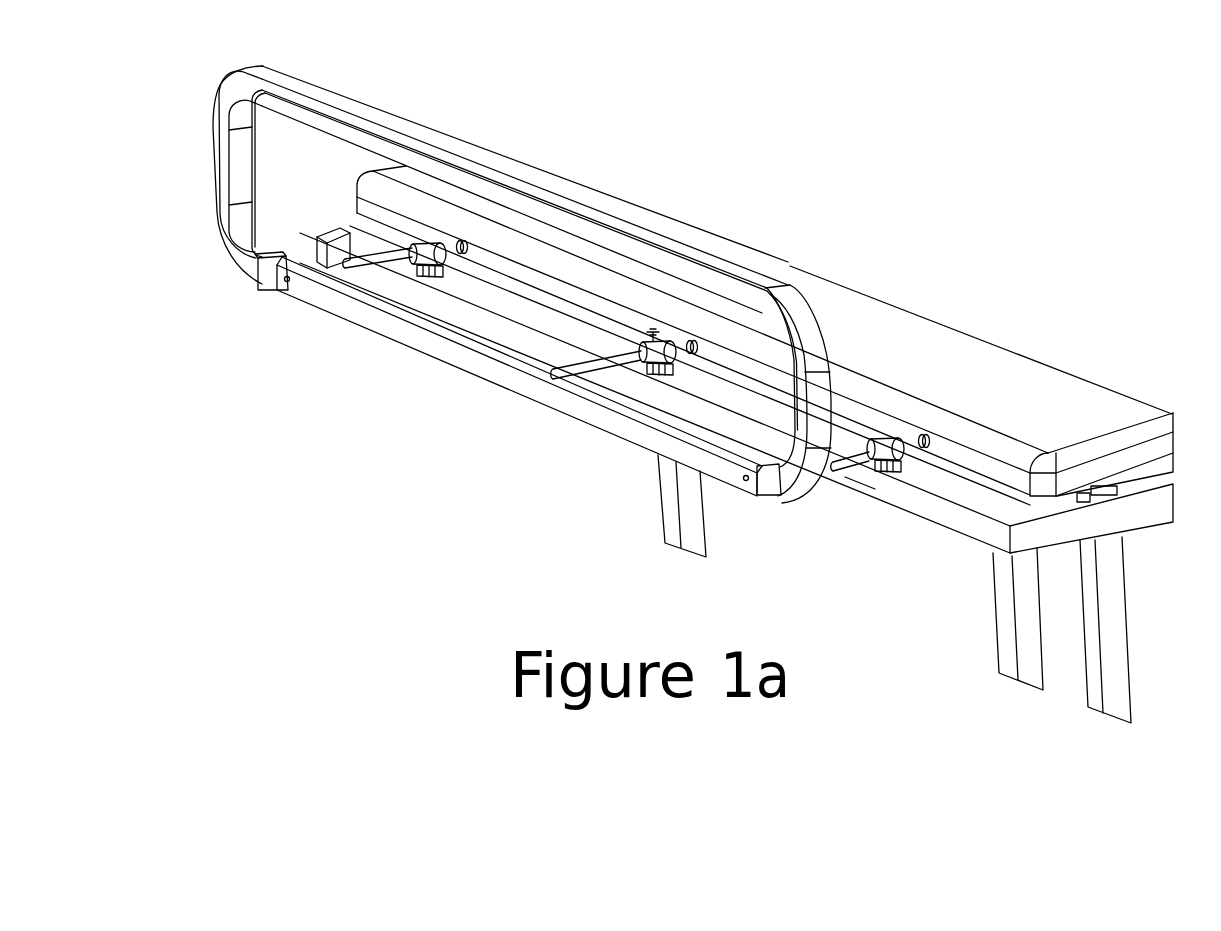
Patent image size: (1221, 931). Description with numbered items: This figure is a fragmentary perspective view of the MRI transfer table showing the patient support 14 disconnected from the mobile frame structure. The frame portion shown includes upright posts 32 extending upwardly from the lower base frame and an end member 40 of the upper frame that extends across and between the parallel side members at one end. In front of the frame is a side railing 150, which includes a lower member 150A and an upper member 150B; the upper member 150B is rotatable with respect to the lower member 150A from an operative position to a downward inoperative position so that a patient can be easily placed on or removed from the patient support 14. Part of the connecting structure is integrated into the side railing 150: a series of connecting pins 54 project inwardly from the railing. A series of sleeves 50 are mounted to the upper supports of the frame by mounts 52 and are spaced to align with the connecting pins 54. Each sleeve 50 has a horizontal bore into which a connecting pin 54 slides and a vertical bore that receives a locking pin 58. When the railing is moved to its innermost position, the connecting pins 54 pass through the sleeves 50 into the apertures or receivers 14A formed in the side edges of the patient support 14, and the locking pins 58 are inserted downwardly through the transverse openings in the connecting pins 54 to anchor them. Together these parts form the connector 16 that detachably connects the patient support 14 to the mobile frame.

The patient support 14 is at (1037, 325).
The apertures or receivers 14A is at (925, 449).
The connector 16 is at (858, 490).
The upright posts 32 is at (1028, 662).
The end member 40 is at (1072, 522).
The sleeve 50 is at (438, 244).
The mount 52 is at (428, 273).
The connecting pin 54 is at (348, 268).
The locking pin 58 is at (655, 333).
The side railing 150 is at (522, 284).
The lower member 150A is at (527, 389).
The upper member 150B is at (590, 215).